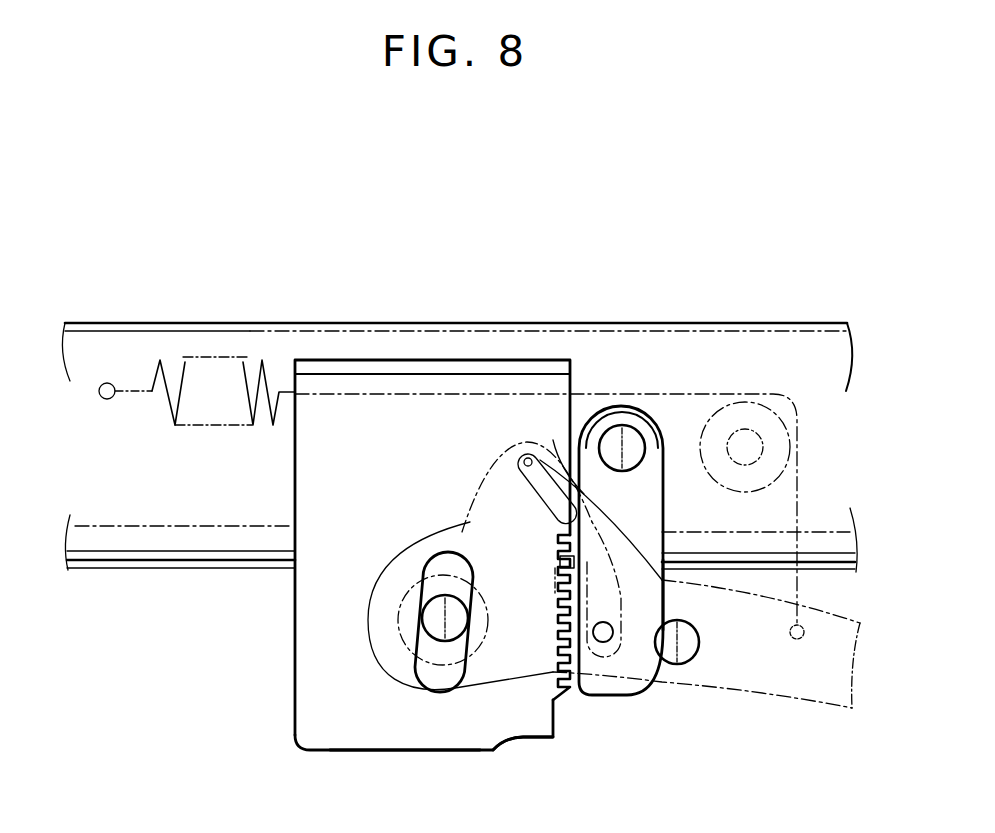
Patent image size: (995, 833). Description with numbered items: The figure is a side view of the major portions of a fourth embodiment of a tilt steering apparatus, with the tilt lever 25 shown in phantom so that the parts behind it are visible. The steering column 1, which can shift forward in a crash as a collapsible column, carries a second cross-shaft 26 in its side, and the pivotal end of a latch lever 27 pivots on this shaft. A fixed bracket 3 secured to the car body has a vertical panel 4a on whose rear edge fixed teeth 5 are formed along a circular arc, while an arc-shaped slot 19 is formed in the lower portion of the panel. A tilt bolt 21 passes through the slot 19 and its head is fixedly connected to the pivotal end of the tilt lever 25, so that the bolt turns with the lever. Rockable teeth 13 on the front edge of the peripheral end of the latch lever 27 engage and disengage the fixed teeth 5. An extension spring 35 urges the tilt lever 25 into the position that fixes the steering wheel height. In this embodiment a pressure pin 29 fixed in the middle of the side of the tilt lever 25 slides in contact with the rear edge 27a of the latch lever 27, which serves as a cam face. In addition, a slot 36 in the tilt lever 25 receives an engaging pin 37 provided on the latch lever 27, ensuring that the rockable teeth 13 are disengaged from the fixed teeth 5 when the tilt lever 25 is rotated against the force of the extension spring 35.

The steering column 1 is at (441, 340).
The fixed bracket 3 is at (333, 725).
The vertical panel 4a is at (412, 732).
The teeth 5 is at (574, 700).
The teeth 13 is at (523, 760).
The slots 19 is at (455, 688).
The tilt bolt 21 is at (428, 618).
The tilt lever 25 is at (755, 678).
The second cross-shaft 26 is at (632, 440).
The latch lever 27 is at (642, 522).
The rear edge 27a is at (662, 600).
The pressure pin 29 is at (685, 660).
The extension spring 35 is at (262, 382).
The slot 36 is at (528, 456).
The engaging pin 37 is at (604, 640).